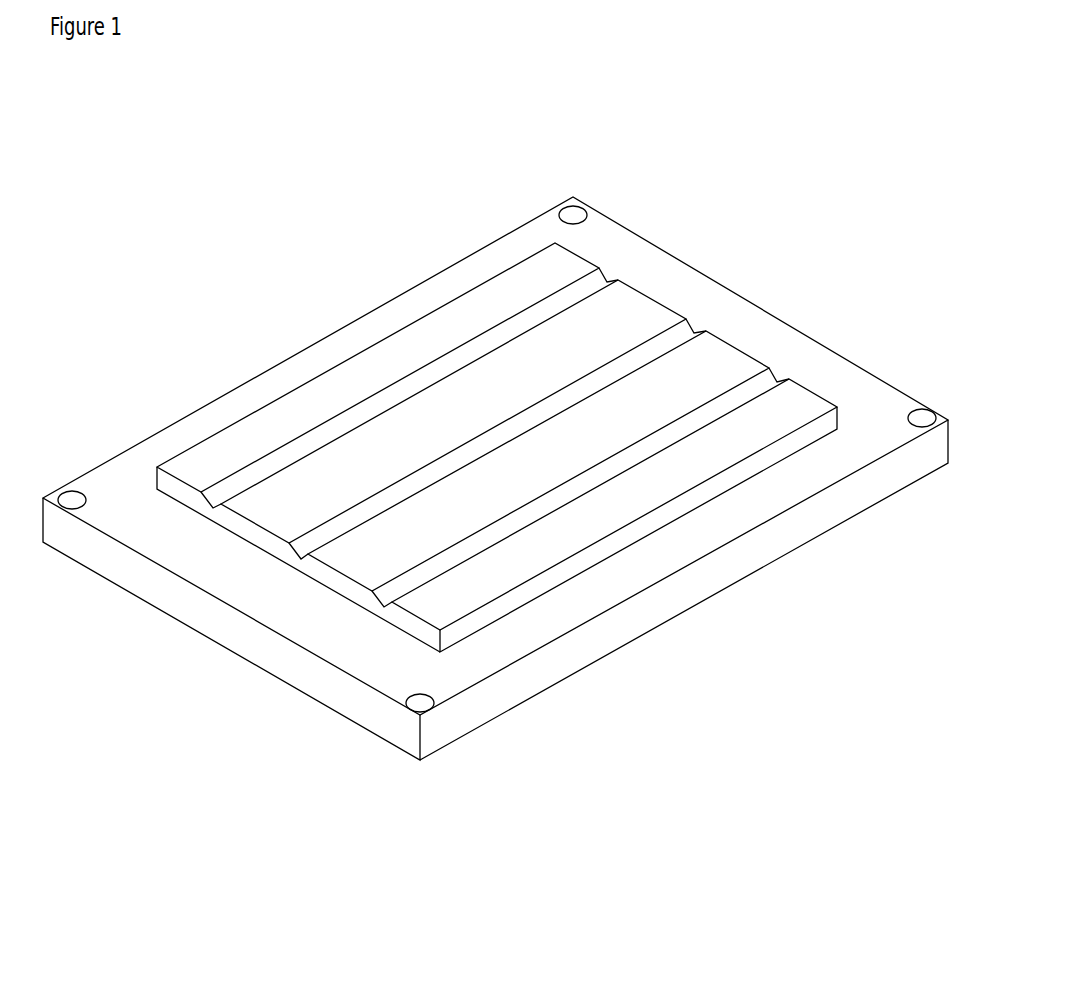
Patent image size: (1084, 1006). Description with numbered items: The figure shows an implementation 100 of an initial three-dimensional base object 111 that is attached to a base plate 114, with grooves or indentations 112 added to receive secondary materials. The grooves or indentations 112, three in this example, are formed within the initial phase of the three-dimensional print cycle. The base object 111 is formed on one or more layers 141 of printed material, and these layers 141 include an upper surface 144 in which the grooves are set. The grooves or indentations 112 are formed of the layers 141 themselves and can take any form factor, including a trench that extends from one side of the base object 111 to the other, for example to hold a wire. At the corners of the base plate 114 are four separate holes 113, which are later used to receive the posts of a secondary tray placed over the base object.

The implementation 100 is at (358, 135).
The initial 3D base object 111 is at (388, 366).
The grooves or indentations 112 is at (373, 592).
The holes 113 is at (407, 712).
The base plate 114 is at (602, 588).
The layers of printed material 141 is at (763, 453).
The upper surface 144 is at (748, 435).